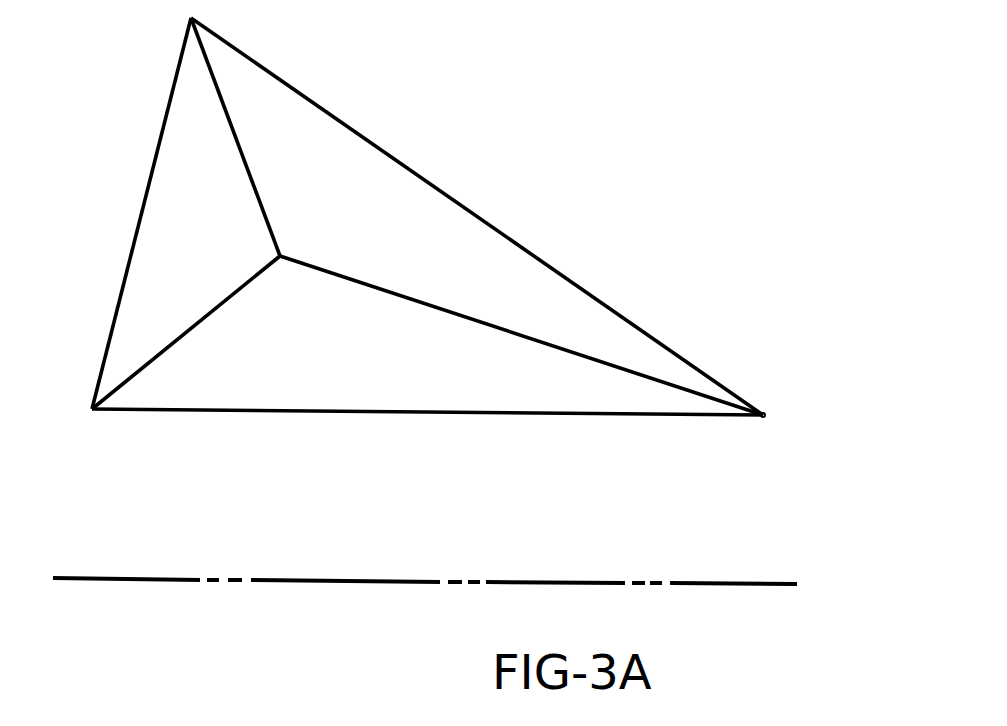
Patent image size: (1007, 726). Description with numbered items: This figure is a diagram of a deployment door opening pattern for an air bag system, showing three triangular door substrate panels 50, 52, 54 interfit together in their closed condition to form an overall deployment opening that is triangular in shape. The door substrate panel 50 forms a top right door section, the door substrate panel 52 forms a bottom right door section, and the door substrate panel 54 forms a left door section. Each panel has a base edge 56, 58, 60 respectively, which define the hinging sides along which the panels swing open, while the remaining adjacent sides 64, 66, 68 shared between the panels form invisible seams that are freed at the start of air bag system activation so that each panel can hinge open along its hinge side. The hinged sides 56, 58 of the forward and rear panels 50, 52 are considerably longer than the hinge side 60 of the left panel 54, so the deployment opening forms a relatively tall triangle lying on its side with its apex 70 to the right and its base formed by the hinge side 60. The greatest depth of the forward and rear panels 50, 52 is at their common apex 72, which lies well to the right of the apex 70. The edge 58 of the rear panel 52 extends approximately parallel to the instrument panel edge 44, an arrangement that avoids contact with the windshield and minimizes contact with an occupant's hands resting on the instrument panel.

The instrument panel edge 44 is at (697, 583).
The door substrate panel 50 is at (380, 202).
The door substrate panel 52 is at (254, 392).
The door substrate panel 54 is at (150, 259).
The base edge 56 is at (487, 223).
The base edge 58 is at (383, 413).
The base edge 60 is at (142, 200).
The adjacent side 64 is at (560, 347).
The adjacent side 66 is at (170, 345).
The adjacent side 68 is at (231, 125).
The apex 70 is at (766, 412).
The common apex 72 is at (281, 247).